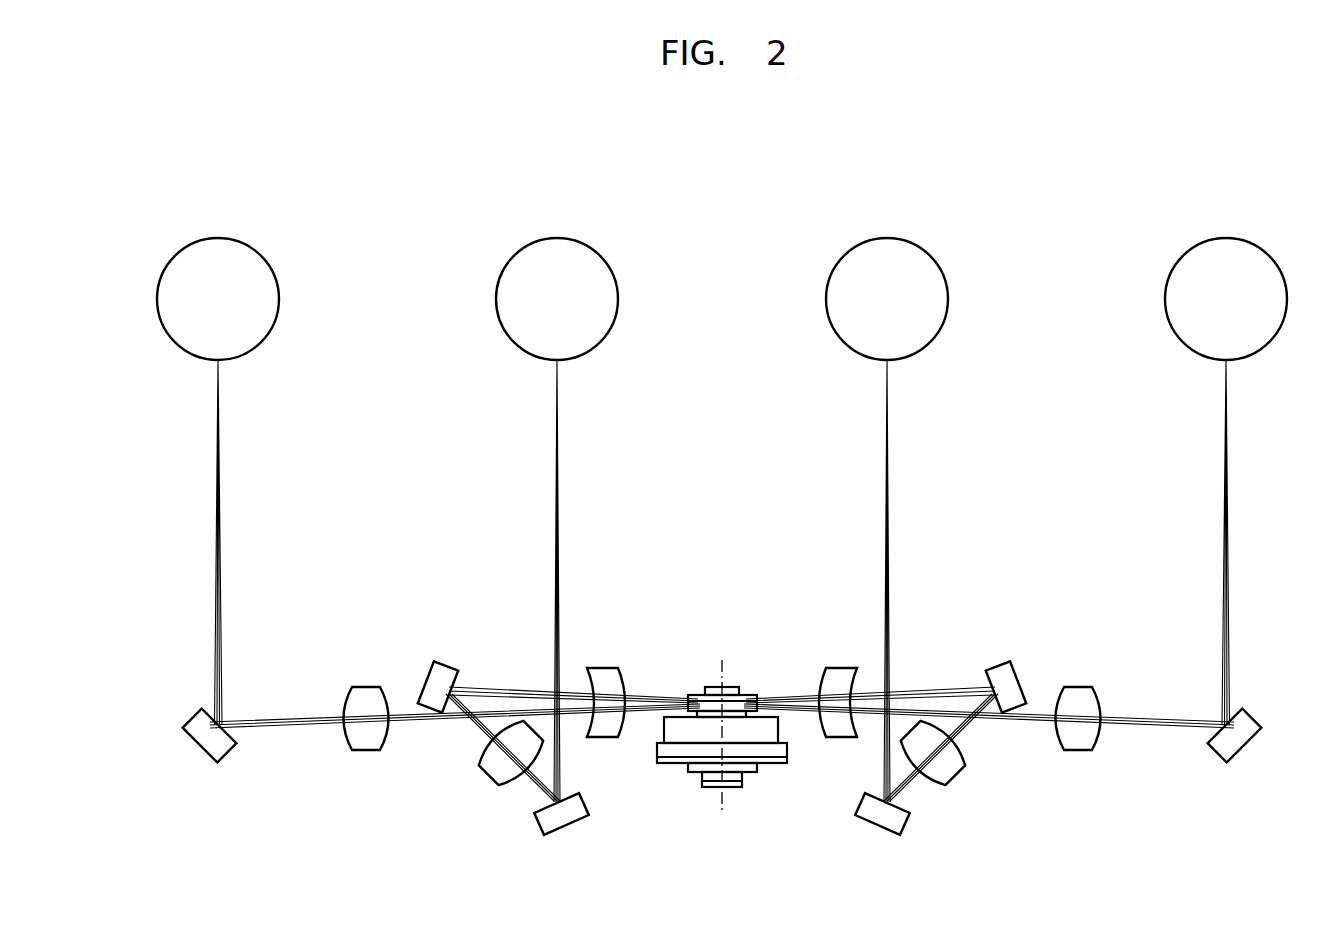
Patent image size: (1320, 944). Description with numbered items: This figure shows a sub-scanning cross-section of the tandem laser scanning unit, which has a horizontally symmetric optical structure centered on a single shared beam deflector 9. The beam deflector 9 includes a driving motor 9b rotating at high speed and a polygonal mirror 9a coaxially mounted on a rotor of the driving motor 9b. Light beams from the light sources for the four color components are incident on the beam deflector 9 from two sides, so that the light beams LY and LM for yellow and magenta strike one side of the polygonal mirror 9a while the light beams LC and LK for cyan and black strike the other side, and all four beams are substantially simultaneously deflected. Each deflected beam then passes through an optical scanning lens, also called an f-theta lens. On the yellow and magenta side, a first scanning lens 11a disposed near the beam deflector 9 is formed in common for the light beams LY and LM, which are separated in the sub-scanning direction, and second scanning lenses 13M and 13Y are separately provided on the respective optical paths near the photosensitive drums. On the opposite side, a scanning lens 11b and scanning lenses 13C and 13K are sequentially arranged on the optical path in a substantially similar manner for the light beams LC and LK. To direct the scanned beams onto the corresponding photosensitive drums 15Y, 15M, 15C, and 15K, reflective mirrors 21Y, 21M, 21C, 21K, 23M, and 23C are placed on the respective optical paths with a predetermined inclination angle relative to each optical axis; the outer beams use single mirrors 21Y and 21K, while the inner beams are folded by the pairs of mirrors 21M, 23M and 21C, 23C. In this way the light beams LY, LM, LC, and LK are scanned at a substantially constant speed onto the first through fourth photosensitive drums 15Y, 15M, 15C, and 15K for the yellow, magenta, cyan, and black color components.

The beam deflector 9 is at (732, 706).
The polygonal mirror 9a is at (748, 697).
The driving motor 9b is at (768, 763).
The scanning lens 11a is at (838, 669).
The scanning lens 11b is at (603, 669).
The scanning lens 13K is at (350, 690).
The scanning lens 13C is at (490, 773).
The scanning lens 13M is at (954, 773).
The scanning lens 13Y is at (1094, 690).
The fourth photosensitive drum 15K is at (263, 253).
The third photosensitive drum 15C is at (602, 253).
The second photosensitive drum 15M is at (932, 253).
The first photosensitive drum 15Y is at (1271, 253).
The reflective mirror 21K is at (205, 755).
The reflective mirror 21C is at (436, 660).
The reflective mirror 21M is at (1008, 660).
The reflective mirror 21Y is at (1239, 754).
The reflective mirror 23C is at (562, 834).
The reflective mirror 23M is at (882, 834).
The light beam LK is at (220, 483).
The light beam LC is at (559, 483).
The light beam LM is at (889, 483).
The light beam LY is at (1228, 483).